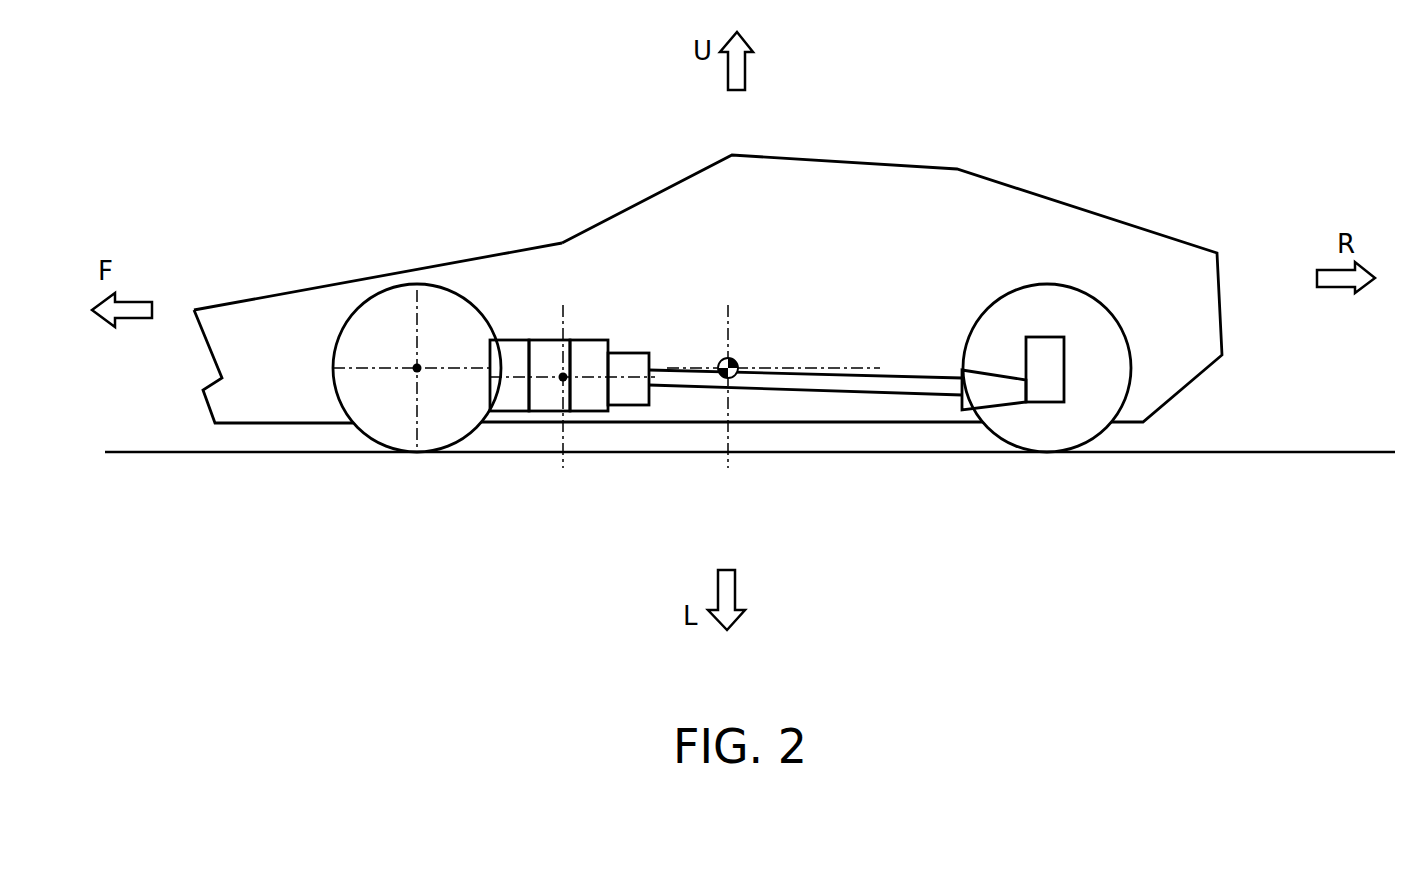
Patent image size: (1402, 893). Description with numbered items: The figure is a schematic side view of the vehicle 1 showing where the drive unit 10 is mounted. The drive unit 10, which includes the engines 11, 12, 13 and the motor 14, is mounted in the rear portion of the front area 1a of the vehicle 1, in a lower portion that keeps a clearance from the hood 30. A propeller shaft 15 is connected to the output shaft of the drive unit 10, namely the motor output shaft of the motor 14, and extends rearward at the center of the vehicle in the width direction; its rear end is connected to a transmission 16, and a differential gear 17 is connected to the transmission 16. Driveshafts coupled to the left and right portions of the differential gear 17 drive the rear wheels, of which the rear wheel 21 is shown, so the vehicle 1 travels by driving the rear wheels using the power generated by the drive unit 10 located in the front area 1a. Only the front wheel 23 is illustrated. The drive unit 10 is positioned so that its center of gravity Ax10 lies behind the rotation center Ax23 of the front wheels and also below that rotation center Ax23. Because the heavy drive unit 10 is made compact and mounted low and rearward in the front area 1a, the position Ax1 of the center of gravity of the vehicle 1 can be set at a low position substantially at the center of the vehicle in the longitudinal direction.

The vehicle 1 is at (1097, 143).
The front area 1a is at (305, 313).
The hood 30 is at (390, 273).
The drive unit 10 is at (571, 460).
The engine 11 is at (512, 397).
The engine 12 is at (543, 397).
The engine 13 is at (586, 397).
The motor 14 is at (627, 395).
The propeller shaft 15 is at (899, 389).
The transmission 16 is at (988, 389).
The differential gear 17 is at (1047, 386).
The rear wheel 21 is at (1077, 417).
The front wheel 23 is at (385, 420).
The position of center of gravity of the vehicle Ax1 is at (717, 358).
The center of gravity of the drive unit Ax10 is at (554, 367).
The rotation center of the front wheels Ax23 is at (424, 374).